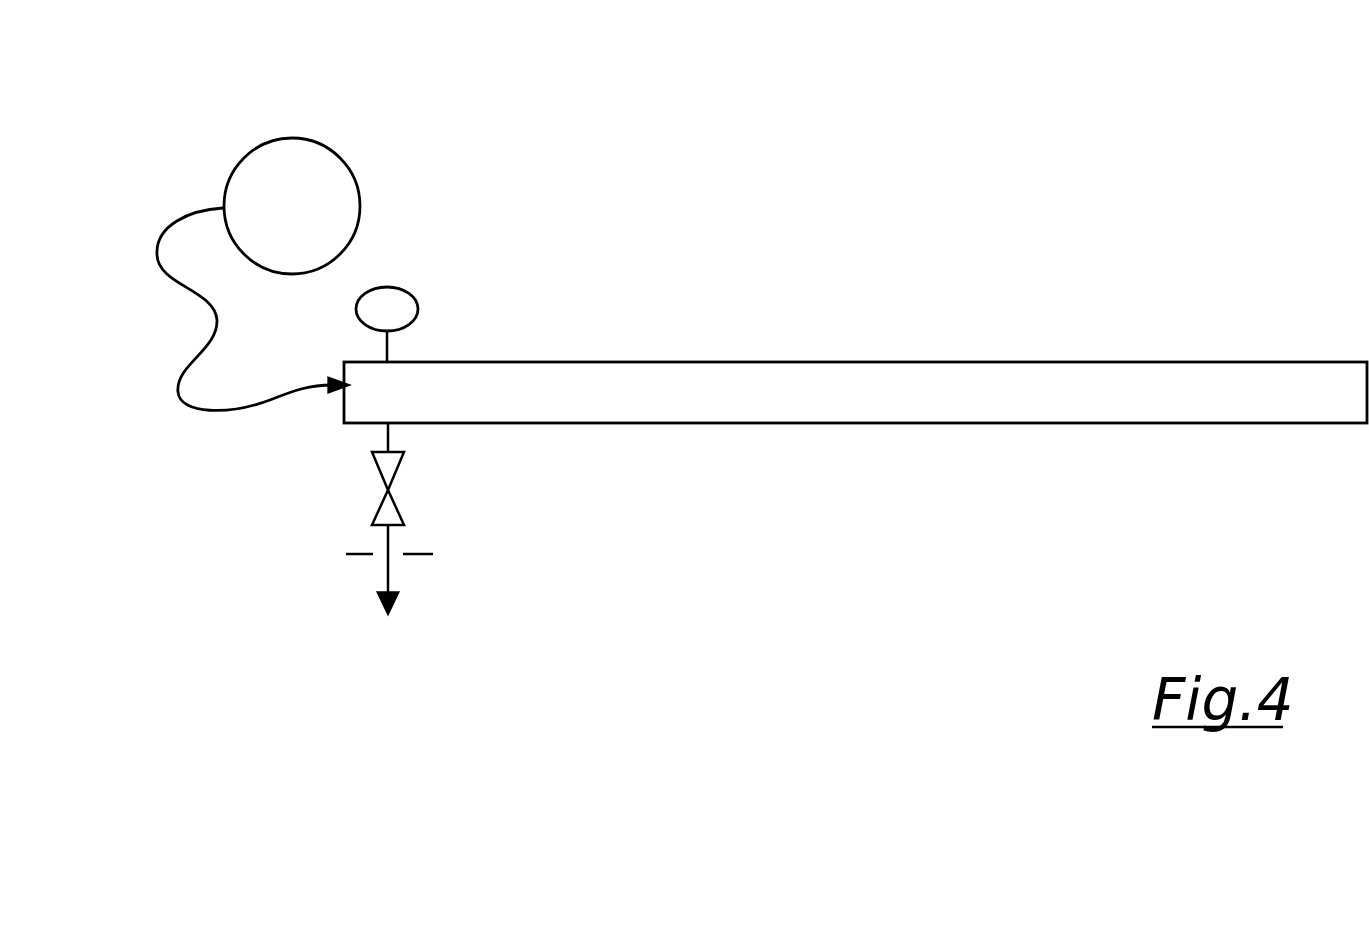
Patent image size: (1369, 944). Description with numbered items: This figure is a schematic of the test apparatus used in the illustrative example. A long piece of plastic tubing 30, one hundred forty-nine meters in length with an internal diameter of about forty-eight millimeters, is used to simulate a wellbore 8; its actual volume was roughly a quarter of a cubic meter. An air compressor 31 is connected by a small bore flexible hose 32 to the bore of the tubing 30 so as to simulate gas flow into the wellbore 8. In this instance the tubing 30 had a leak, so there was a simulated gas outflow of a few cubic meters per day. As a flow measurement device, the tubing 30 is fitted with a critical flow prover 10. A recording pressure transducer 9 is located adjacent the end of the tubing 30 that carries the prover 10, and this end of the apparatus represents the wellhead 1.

The wellhead 1 is at (325, 499).
The wellbore 8 is at (1068, 387).
The recording pressure transducer 9 is at (418, 308).
The critical flow prover 10 is at (420, 552).
The plastic tubing 30 is at (790, 362).
The air compressor 31 is at (322, 145).
The small bore flexible hose 32 is at (182, 400).